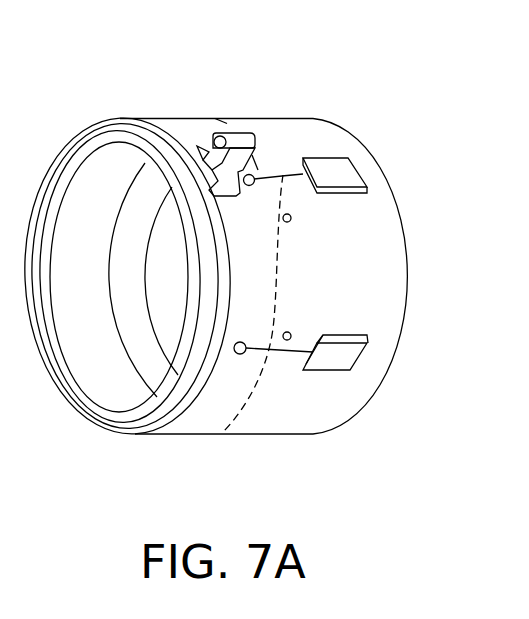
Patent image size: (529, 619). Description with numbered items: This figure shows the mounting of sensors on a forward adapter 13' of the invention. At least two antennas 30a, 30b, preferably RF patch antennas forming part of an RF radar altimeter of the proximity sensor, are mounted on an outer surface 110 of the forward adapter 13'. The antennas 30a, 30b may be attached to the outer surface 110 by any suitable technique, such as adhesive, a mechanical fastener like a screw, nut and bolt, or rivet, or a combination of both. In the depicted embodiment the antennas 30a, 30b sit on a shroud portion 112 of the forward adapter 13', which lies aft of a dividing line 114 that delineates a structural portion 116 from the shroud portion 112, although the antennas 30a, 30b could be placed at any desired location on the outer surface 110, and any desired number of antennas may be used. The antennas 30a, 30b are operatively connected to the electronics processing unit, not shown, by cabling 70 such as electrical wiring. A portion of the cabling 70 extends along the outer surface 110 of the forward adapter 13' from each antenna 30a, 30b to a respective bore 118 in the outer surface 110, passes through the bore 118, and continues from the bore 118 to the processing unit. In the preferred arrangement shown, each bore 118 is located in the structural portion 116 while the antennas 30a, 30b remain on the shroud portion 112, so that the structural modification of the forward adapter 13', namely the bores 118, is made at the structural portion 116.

The forward adapter 13' is at (253, 258).
The cabling 70 is at (283, 175).
The antenna 30a is at (338, 175).
The antenna 30b is at (347, 353).
The outer surface 110 is at (392, 265).
The shroud portion 112 is at (300, 438).
The dividing line 114 is at (213, 438).
The structural portion 116 is at (128, 437).
The bore 118 is at (256, 186).